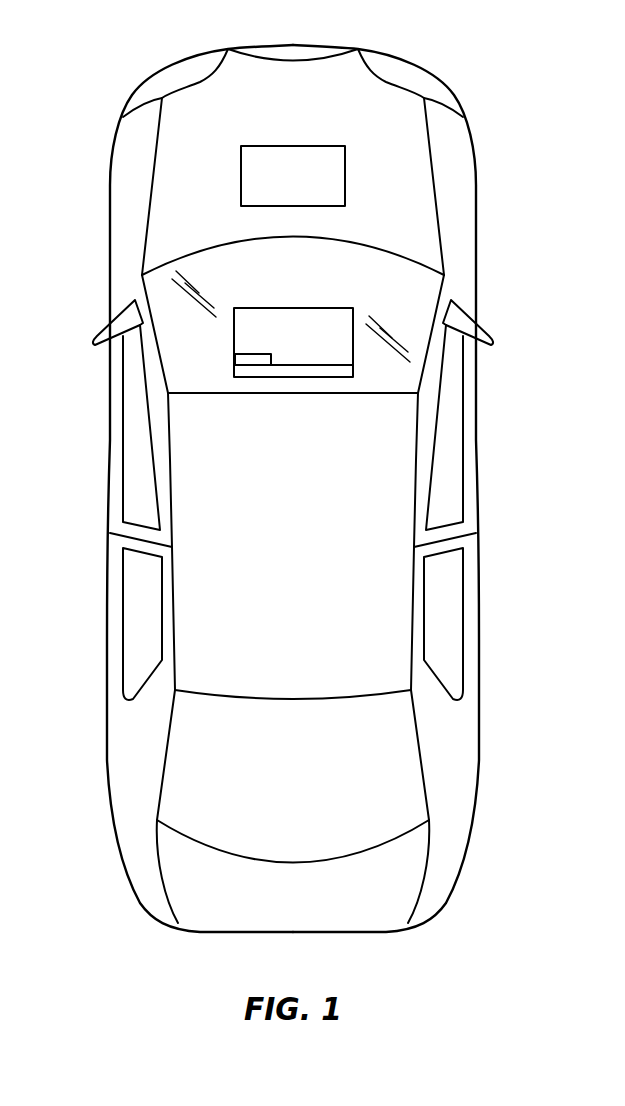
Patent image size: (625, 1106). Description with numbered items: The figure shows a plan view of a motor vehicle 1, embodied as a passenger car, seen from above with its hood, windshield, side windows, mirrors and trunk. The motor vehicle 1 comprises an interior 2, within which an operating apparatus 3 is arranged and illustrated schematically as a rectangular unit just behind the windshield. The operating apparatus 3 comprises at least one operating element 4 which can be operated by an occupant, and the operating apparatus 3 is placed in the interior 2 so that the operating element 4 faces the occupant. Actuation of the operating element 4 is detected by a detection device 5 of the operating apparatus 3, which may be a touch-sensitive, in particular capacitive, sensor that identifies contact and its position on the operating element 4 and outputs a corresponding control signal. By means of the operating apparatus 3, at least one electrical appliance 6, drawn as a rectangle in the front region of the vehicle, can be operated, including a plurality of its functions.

The motor vehicle 1 is at (292, 50).
The interior 2 is at (398, 287).
The operating apparatus 3 is at (253, 298).
The operating element 4 is at (253, 373).
The detection device 5 is at (236, 358).
The electrical appliance 6 is at (332, 176).